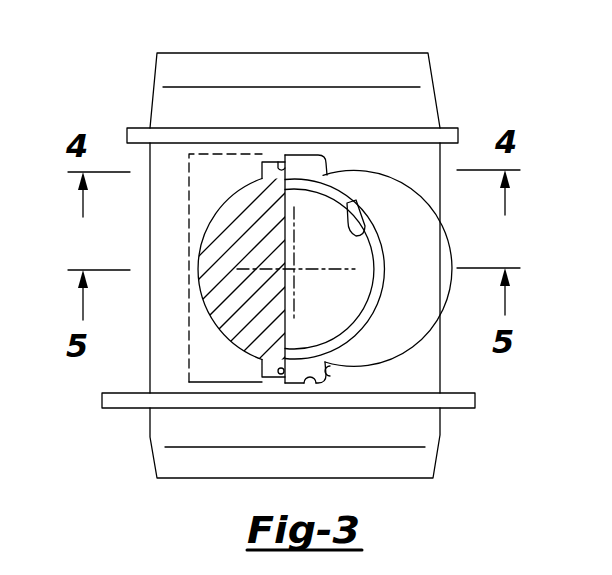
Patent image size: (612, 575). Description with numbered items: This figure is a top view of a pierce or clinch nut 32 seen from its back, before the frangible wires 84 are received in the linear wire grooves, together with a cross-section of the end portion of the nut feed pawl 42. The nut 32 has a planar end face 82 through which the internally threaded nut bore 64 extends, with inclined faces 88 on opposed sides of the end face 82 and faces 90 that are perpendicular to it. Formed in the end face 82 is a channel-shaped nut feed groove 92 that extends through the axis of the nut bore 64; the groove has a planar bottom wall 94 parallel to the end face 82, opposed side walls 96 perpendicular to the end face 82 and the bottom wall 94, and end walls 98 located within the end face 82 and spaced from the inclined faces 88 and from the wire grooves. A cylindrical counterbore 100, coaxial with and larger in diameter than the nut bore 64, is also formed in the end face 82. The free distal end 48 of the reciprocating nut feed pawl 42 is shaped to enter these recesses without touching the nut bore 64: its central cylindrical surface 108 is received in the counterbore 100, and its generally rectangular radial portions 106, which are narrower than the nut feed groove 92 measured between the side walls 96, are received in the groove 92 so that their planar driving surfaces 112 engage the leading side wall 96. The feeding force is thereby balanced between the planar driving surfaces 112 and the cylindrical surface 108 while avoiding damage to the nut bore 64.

The nut 32 is at (113, 96).
The inclined faces 88 is at (255, 70).
The faces perpendicular to the end face 90 is at (213, 480).
The frangible wires 84 is at (420, 407).
The nut feed pawl 42 is at (192, 323).
The free distal end of the nut feed pawl 48 is at (215, 353).
The cylindrical surface 108 is at (199, 268).
The counterbore 100 is at (214, 232).
The planar driving surfaces 112 is at (262, 163).
The radial portions 106 is at (274, 167).
The nut feed groove 92 is at (338, 167).
The end face 82 is at (425, 313).
The nut bore 64 is at (356, 236).
The bottom wall 94 is at (297, 380).
The end walls 98 is at (312, 380).
The side walls 96 is at (265, 377).